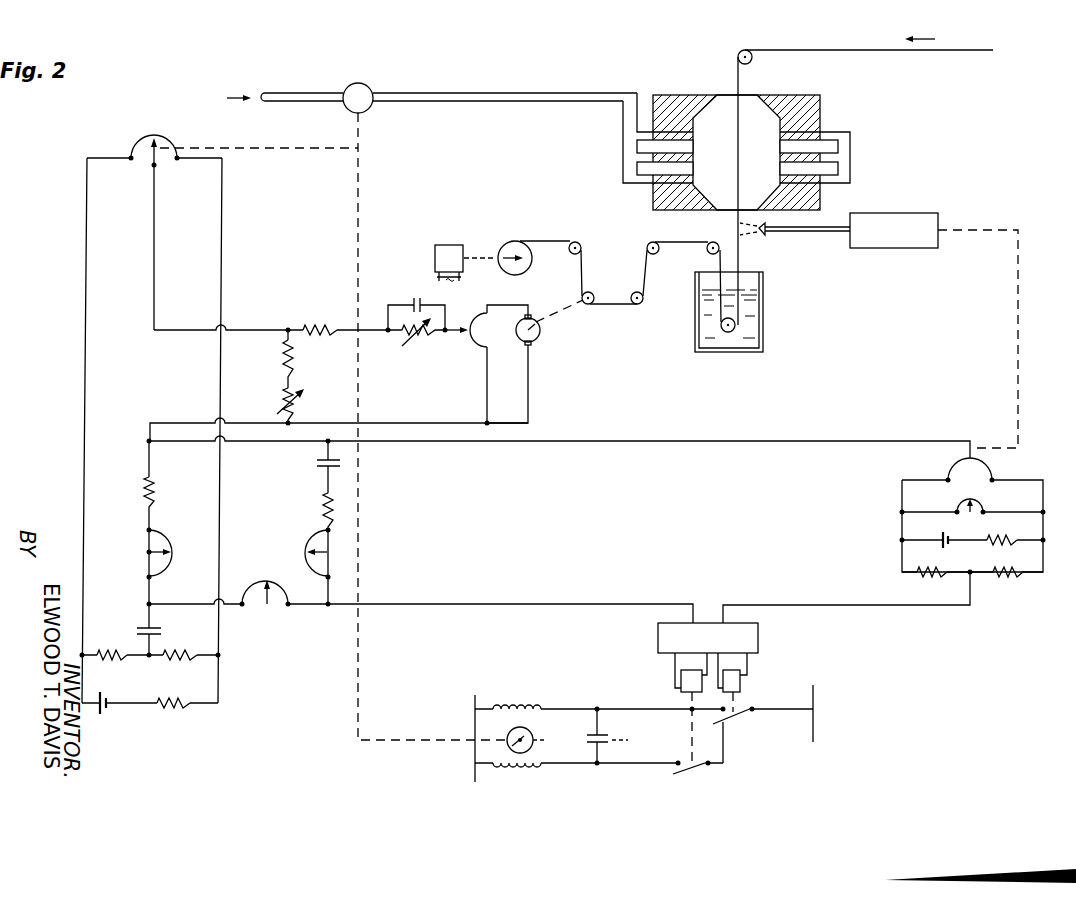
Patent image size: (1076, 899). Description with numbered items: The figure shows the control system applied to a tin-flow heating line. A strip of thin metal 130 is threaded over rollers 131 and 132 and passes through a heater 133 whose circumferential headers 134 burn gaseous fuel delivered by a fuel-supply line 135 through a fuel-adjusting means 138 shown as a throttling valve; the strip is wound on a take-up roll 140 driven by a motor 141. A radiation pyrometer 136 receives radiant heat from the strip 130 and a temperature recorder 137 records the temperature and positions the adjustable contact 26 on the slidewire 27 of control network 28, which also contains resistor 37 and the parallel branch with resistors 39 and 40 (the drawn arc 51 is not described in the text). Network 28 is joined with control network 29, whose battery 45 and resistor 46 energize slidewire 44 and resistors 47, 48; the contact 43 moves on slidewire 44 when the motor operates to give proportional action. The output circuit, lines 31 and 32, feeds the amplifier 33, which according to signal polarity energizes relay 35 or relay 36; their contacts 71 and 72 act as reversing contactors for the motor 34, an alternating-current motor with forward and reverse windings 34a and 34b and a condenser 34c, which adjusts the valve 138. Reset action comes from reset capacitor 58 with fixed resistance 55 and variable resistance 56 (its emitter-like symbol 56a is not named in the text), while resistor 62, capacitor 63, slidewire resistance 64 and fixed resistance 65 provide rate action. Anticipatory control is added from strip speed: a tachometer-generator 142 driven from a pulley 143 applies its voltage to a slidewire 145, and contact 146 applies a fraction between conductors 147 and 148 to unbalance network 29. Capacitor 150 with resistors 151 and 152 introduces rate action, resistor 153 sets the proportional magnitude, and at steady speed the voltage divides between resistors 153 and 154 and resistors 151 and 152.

The adjustable contact 26 is at (973, 452).
The slidewire 27 is at (950, 471).
The control network 28 is at (1065, 470).
The control network 29 is at (123, 374).
The line 31 is at (603, 603).
The line 32 is at (840, 605).
The amplifier 33 is at (707, 621).
The motor 34 is at (540, 740).
The forward winding 34a is at (520, 706).
The reverse winding 34b is at (520, 767).
The condenser 34c is at (627, 736).
The relay 35 is at (682, 687).
The relay 36 is at (742, 684).
The resistor 37 is at (1005, 540).
The resistor 39 is at (1013, 578).
The resistor 40 is at (935, 576).
The contact 43 is at (150, 148).
The slidewire 44 is at (163, 136).
The battery 45 is at (106, 715).
The resistor 46 is at (178, 712).
The resistor 47 is at (109, 651).
The resistor 48 is at (182, 651).
The relay contact arc 51 is at (982, 507).
The fixed resistance 55 is at (157, 480).
The variable resistance 56 is at (170, 570).
The transistor emitter 56a is at (165, 546).
The reset capacitor 58 is at (144, 627).
The slidewire resistance 62 is at (262, 583).
The capacitor 63 is at (315, 463).
The slidewire resistance 64 is at (310, 543).
The fixed resistance 65 is at (323, 497).
The contact 71 is at (694, 768).
The contact 72 is at (737, 721).
The strip of thin metal 130 is at (910, 51).
The roller 131 is at (753, 61).
The roller 132 is at (742, 326).
The heater 133 is at (730, 103).
The circumferential headers 134 is at (852, 151).
The fuel-supply line 135 is at (531, 103).
The radiation pyrometer 136 is at (768, 234).
The temperature recorder 137 is at (912, 214).
The fuel-adjusting means 138 is at (369, 88).
The take-up roll 140 is at (513, 241).
The motor 141 is at (446, 244).
The tachometer-generator 142 is at (540, 339).
The pulley 143 is at (592, 294).
The slidewire 145 is at (471, 339).
The contact 146 is at (455, 327).
The conductor 147 is at (193, 326).
The conductor 148 is at (177, 421).
The capacitor 150 is at (412, 297).
The resistor 151 is at (298, 360).
The adjustable resistor 152 is at (297, 410).
The resistor 153 is at (417, 349).
The resistor 154 is at (321, 325).